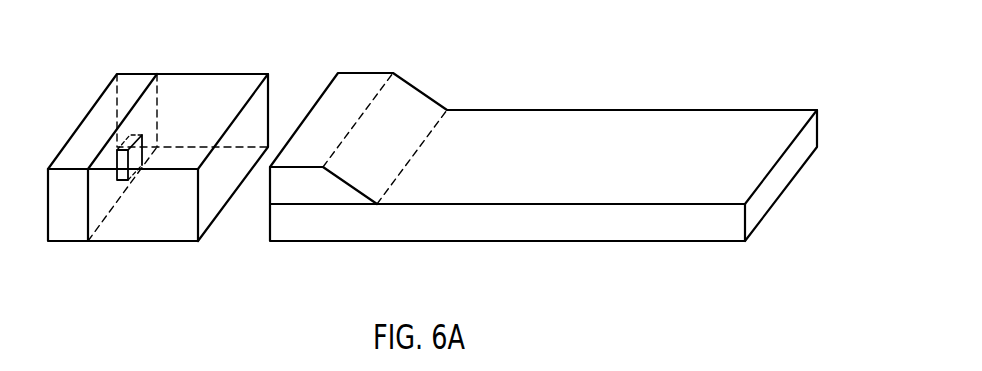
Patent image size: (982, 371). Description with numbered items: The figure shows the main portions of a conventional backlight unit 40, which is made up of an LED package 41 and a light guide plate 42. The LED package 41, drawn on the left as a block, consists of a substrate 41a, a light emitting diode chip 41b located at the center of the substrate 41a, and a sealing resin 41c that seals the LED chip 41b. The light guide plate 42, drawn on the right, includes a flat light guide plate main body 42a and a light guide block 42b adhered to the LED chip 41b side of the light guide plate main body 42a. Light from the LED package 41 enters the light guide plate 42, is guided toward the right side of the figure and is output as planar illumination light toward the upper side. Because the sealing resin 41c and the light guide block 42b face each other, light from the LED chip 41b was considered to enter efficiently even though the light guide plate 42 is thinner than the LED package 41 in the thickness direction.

The conventional backlight unit 40 is at (543, 162).
The LED package 41 is at (158, 163).
The substrate 41a is at (127, 86).
The light emitting diode chip 41b is at (129, 128).
The sealing resin 41c is at (198, 87).
The light guide plate 42 is at (543, 163).
The light guide plate main body 42a is at (640, 223).
The light guide block 42b is at (358, 88).